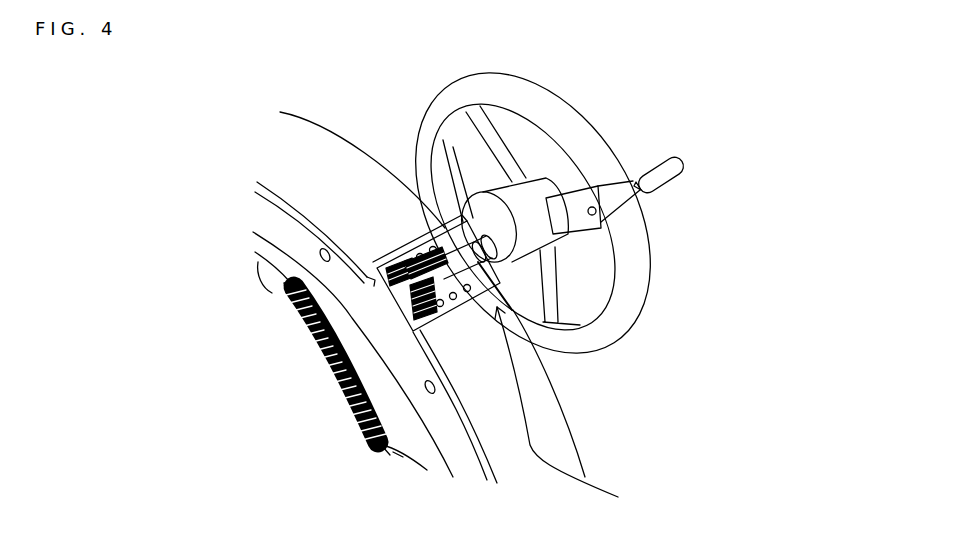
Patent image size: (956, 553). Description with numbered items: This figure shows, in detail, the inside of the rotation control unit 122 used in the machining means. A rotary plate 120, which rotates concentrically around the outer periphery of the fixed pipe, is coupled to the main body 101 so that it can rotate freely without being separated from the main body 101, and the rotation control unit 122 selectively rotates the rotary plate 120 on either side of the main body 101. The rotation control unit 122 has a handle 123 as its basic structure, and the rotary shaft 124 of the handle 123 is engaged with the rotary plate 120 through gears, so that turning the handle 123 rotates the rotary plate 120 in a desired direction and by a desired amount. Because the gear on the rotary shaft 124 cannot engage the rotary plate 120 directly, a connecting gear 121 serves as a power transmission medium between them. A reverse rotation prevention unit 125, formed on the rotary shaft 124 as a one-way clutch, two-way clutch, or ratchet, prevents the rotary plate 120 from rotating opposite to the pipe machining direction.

The main body 101 is at (560, 417).
The rotary plate 120 is at (380, 385).
The connecting gear 121 is at (402, 280).
The rotation control unit 122 is at (573, 407).
The handle 123 is at (637, 281).
The rotary shaft 124 is at (408, 248).
The reverse rotation prevention unit 125 is at (445, 231).